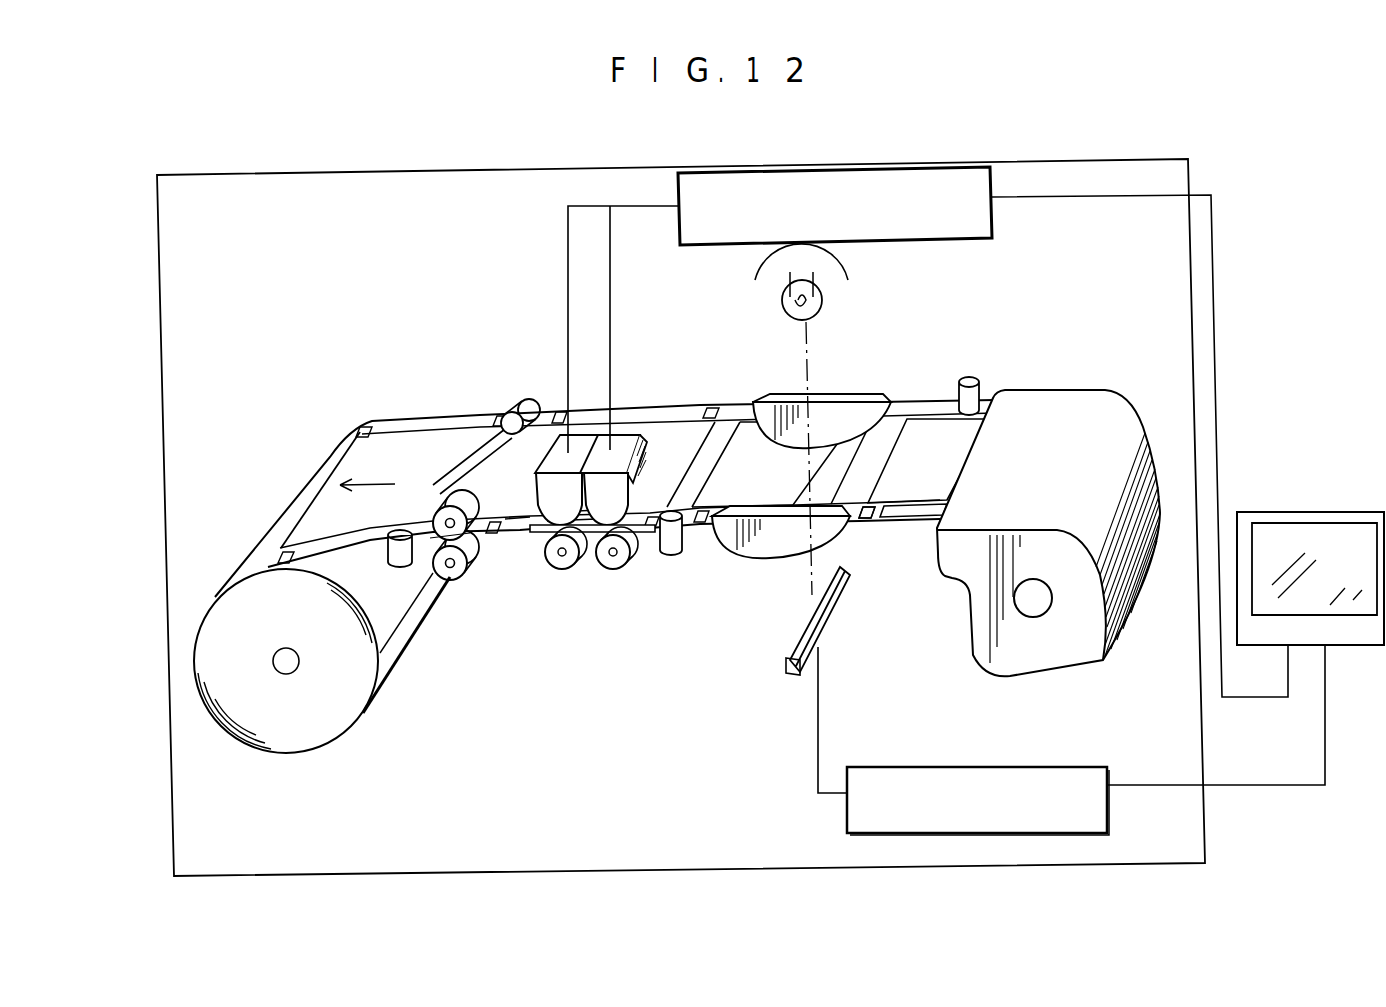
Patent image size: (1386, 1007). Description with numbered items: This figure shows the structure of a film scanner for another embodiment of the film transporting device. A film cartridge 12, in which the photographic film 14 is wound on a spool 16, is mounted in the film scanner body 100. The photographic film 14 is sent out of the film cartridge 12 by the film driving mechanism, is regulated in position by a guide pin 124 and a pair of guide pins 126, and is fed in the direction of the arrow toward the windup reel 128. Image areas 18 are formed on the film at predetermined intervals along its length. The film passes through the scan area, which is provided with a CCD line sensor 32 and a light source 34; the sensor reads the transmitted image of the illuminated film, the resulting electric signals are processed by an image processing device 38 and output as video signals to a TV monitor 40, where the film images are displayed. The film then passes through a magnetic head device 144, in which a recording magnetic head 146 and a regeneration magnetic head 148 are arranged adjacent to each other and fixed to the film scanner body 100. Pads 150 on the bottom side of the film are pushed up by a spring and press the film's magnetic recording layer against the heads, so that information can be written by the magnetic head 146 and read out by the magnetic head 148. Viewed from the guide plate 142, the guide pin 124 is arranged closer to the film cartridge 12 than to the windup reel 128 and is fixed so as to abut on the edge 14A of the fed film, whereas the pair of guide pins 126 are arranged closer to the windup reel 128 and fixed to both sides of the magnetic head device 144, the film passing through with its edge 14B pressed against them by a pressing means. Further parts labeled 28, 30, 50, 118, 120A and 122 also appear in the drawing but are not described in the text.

The film scanner body 100 is at (1098, 158).
The magnetic data regenerating device 50 is at (903, 245).
The light source 34 is at (782, 306).
The windup reel 128 is at (283, 753).
The photographic film 14 is at (941, 391).
The image area 18 is at (741, 438).
The image frame 118 is at (916, 437).
The guide plate 142 is at (840, 412).
The magnetic head device 144 is at (583, 440).
The roller 28 is at (437, 505).
The roller 30 is at (452, 582).
The edge of the photographic film 14B is at (462, 580).
The guide pin 126 is at (400, 568).
The pad 150 is at (560, 570).
The magnetic head 146 is at (660, 534).
The magnetic head 148 is at (533, 537).
The magnetic recording portion 122 is at (556, 537).
The perforation 120A is at (870, 520).
The guide pin 124 is at (982, 378).
The film cartridge 12 is at (1033, 655).
The spool 16 is at (1035, 612).
The edge of the photographic film 14A is at (1010, 386).
The CCD line sensor 32 is at (790, 648).
The image processing device 38 is at (950, 767).
The TV monitor 40 is at (1305, 512).